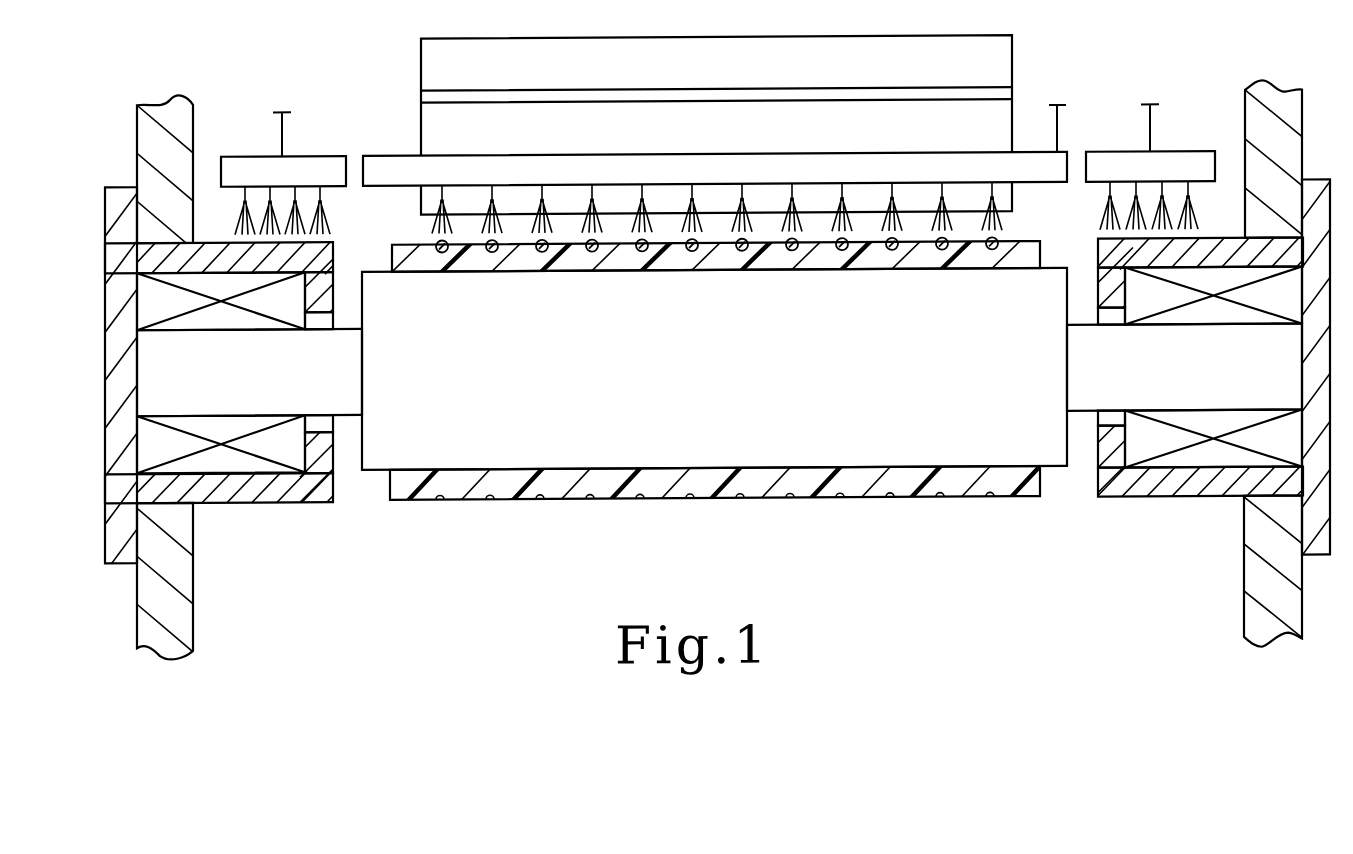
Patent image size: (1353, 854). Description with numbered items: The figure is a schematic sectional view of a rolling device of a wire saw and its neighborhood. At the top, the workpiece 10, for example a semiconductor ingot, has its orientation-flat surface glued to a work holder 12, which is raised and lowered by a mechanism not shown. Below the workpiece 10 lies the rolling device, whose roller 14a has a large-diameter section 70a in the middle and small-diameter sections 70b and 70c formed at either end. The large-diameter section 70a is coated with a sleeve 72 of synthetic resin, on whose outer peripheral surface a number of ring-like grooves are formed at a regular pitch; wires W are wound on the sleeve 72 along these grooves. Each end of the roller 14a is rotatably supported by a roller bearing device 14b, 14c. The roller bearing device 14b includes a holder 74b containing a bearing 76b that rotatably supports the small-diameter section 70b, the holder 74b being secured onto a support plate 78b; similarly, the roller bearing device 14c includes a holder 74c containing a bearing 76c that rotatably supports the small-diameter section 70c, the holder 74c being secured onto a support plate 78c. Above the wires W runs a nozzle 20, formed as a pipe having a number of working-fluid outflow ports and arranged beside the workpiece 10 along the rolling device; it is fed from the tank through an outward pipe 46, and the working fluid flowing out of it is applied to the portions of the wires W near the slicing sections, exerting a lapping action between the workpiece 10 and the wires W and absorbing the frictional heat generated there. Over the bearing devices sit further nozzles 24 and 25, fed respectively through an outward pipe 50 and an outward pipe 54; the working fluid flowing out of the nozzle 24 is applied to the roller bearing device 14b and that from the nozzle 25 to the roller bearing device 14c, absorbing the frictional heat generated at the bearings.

The workpiece 10 is at (421, 122).
The work holder 12 is at (421, 62).
The roller 14a is at (712, 500).
The roller bearing device 14b is at (287, 507).
The roller bearing device 14c is at (1197, 499).
The nozzle 20 is at (1068, 148).
The nozzle 24 is at (317, 155).
The nozzle 25 is at (1186, 150).
The outward pipe 46 is at (1053, 130).
The outward pipe 50 is at (282, 133).
The outward pipe 54 is at (1153, 125).
The large-diameter section 70a is at (380, 475).
The small-diameter section 70b is at (343, 418).
The small-diameter section 70c is at (1083, 413).
The sleeve 72 is at (527, 500).
The holder 74b is at (243, 503).
The holder 74c is at (1118, 499).
The bearing 76b is at (285, 295).
The bearing 76c is at (1143, 293).
The support plate 78b is at (196, 112).
The support plate 78c is at (1282, 95).
The wires W is at (998, 243).